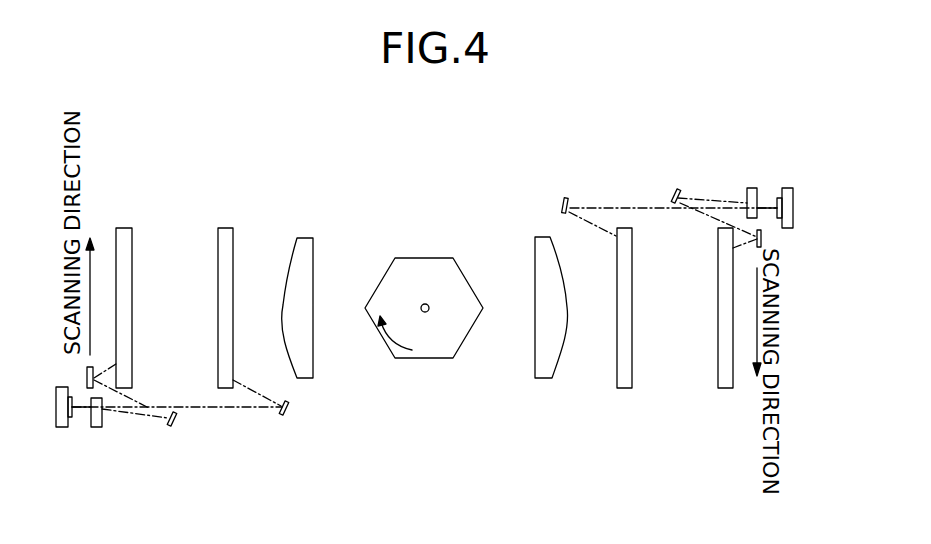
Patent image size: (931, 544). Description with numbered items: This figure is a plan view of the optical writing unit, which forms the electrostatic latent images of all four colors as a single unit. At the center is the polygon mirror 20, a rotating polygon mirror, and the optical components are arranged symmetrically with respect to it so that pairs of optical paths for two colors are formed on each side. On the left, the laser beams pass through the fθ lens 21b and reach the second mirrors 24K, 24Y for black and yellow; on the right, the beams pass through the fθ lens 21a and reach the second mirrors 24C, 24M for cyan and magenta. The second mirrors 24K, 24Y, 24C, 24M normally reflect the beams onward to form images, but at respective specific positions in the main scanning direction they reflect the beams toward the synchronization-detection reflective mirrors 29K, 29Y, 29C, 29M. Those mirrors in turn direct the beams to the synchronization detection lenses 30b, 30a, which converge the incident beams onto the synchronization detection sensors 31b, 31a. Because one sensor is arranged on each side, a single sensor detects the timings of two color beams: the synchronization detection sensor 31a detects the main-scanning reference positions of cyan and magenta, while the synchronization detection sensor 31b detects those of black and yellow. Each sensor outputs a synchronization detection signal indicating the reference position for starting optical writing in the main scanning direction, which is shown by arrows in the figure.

The polygon mirror 20 is at (422, 258).
The fθ lens 21a is at (538, 237).
The fθ lens 21b is at (305, 238).
The second mirror 24K is at (132, 243).
The second mirror 24Y is at (220, 245).
The second mirror 24C is at (617, 372).
The second mirror 24M is at (718, 372).
The synchronization-detection reflective mirror 29K is at (178, 426).
The synchronization-detection reflective mirror 29Y is at (288, 416).
The synchronization-detection reflective mirror 29C is at (565, 199).
The synchronization-detection reflective mirror 29M is at (673, 192).
The synchronization detection lens 30a is at (750, 188).
The synchronization detection lens 30b is at (95, 427).
The synchronization detection sensor 31a is at (788, 188).
The synchronization detection sensor 31b is at (58, 427).